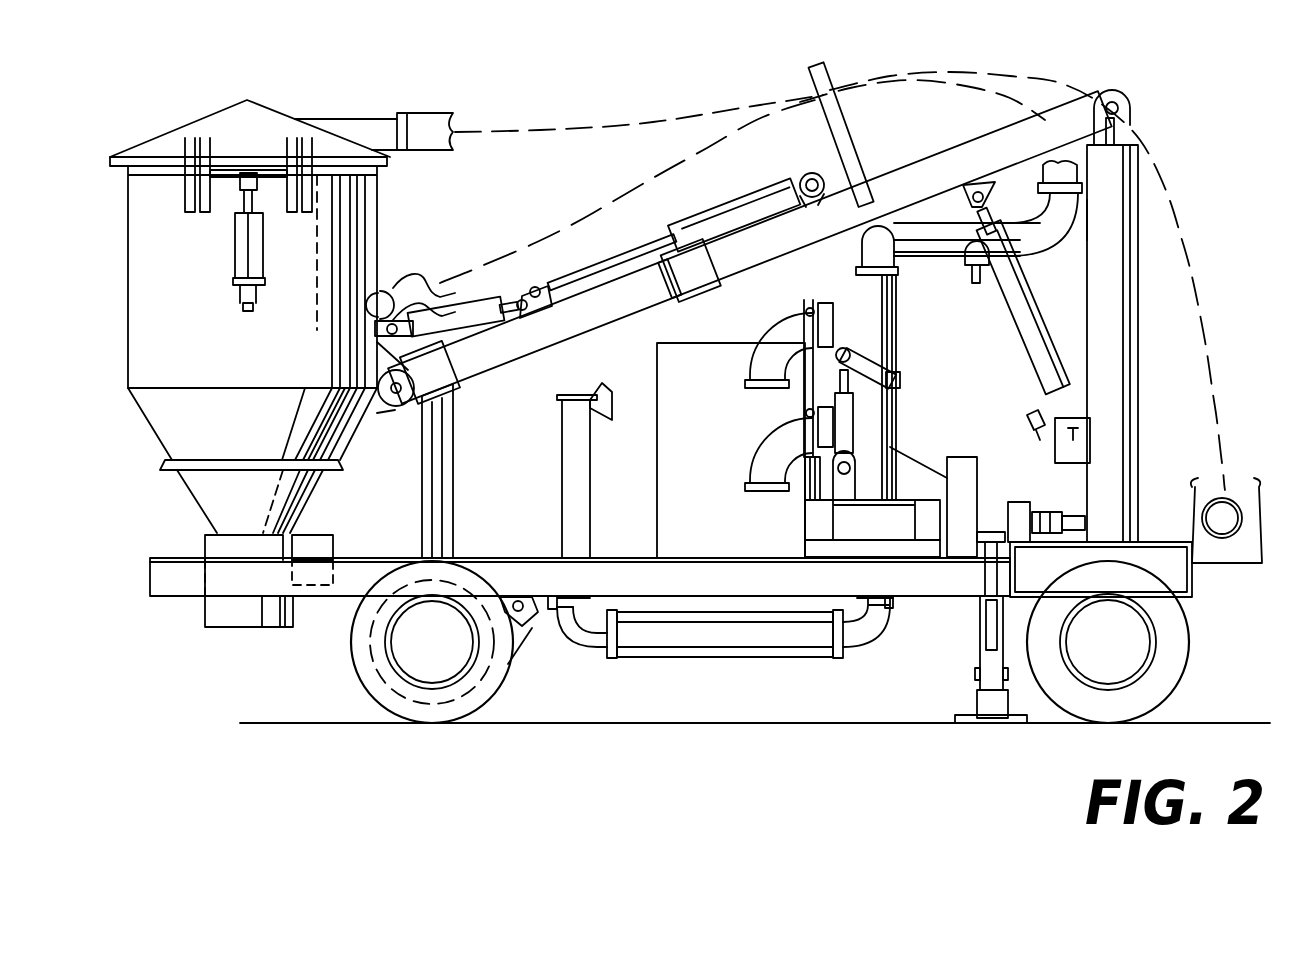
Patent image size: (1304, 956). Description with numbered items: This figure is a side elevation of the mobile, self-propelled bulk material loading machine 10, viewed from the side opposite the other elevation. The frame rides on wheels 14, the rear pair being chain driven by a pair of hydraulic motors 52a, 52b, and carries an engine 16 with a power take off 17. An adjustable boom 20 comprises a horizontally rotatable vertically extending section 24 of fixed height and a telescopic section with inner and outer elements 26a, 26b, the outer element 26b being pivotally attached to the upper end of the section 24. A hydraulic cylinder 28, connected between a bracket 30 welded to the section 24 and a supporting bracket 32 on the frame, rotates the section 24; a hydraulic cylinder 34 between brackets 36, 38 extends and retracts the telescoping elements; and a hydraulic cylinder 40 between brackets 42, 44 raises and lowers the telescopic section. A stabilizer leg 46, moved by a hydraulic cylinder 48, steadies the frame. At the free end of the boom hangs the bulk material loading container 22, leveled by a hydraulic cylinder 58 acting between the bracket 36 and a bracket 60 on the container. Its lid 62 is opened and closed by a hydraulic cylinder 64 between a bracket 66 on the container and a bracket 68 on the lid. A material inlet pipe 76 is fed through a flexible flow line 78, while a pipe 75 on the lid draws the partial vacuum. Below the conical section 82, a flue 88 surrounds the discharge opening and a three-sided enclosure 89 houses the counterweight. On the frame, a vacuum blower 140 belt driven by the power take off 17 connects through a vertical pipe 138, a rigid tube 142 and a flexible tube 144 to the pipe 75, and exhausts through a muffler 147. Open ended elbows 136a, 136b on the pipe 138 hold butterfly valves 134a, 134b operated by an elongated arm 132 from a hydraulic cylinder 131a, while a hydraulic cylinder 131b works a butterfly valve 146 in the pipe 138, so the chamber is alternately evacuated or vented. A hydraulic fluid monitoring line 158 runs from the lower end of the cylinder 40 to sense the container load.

The bulk material loading machine 10 is at (683, 108).
The wheels 14 is at (1190, 660).
The engine 16 is at (650, 414).
The power take off 17 is at (910, 468).
The adjustable boom 20 is at (1092, 218).
The bulk material loading container 22 is at (122, 303).
The vertically extending section 24 is at (1135, 317).
The inner element 26a is at (608, 320).
The outer element 26b is at (765, 285).
The hydraulic cylinder 28 is at (1048, 536).
The bracket 30 is at (1062, 512).
The supporting bracket 32 is at (1020, 500).
The hydraulic cylinder 34 is at (735, 205).
The bracket 36 is at (535, 285).
The bracket 38 is at (816, 172).
The hydraulic cylinder 40 is at (1025, 308).
The bracket 42 is at (1092, 432).
The bracket 44 is at (928, 222).
The stabilizer leg 46 is at (975, 706).
The hydraulic cylinder 48 is at (980, 562).
The hydraulic motor 52a is at (540, 616).
The hydraulic motor 52b is at (530, 640).
The hydraulic cylinder 58 is at (470, 310).
The bracket 60 is at (377, 370).
The container lid 62 is at (262, 110).
The hydraulic cylinder 64 is at (232, 252).
The bracket 66 is at (246, 305).
The bracket 68 is at (218, 173).
The pipe 75 is at (345, 120).
The material inlet pipe 76 is at (384, 290).
The flexible flow line 78 is at (430, 280).
The conical section 82 is at (205, 505).
The flue 88 is at (248, 630).
The three-sided enclosure 89 is at (330, 540).
The hydraulic cylinder 131a is at (805, 487).
The hydraulic cylinder 131b is at (845, 420).
The elongated arm 132 is at (805, 387).
The butterfly valve 134a is at (812, 303).
The butterfly valve 134b is at (812, 414).
The open ended elbow 136a is at (770, 325).
The open ended elbow 136b is at (753, 470).
The vertical pipe 138 is at (884, 320).
The vacuum blower 140 is at (850, 530).
The rigid tube 142 is at (1060, 230).
The flexible tube 144 is at (425, 115).
The butterfly valve 146 is at (873, 363).
The muffler 147 is at (755, 645).
The hydraulic fluid monitoring line 158 is at (1025, 420).